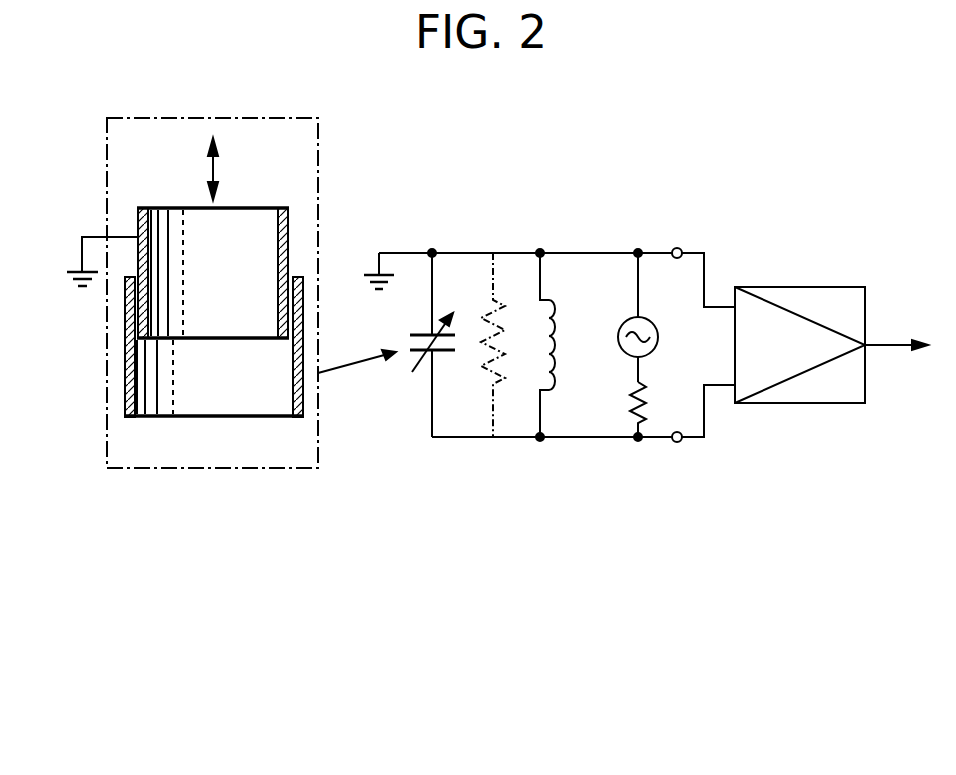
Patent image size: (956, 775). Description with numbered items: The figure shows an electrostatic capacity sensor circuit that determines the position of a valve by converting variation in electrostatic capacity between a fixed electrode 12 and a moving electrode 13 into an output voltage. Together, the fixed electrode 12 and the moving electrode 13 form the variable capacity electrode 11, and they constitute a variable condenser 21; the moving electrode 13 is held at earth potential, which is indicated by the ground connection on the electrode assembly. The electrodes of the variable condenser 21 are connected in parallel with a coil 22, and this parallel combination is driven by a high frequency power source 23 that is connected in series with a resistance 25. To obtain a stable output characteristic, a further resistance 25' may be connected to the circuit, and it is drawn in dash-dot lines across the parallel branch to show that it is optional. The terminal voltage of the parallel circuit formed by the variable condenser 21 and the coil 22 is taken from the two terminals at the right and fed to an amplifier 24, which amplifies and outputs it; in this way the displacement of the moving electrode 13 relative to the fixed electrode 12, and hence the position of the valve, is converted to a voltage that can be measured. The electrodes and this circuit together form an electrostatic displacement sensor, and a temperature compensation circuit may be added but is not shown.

The variable capacity electrode 11 is at (120, 361).
The fixed electrode 12 is at (302, 409).
The moving electrode 13 is at (288, 248).
The variable condenser 21 is at (444, 368).
The coil 22 is at (550, 302).
The high frequency power source 23 is at (650, 318).
The amplifier 24 is at (795, 403).
The resistance 25 is at (624, 440).
The resistance 25' is at (506, 311).